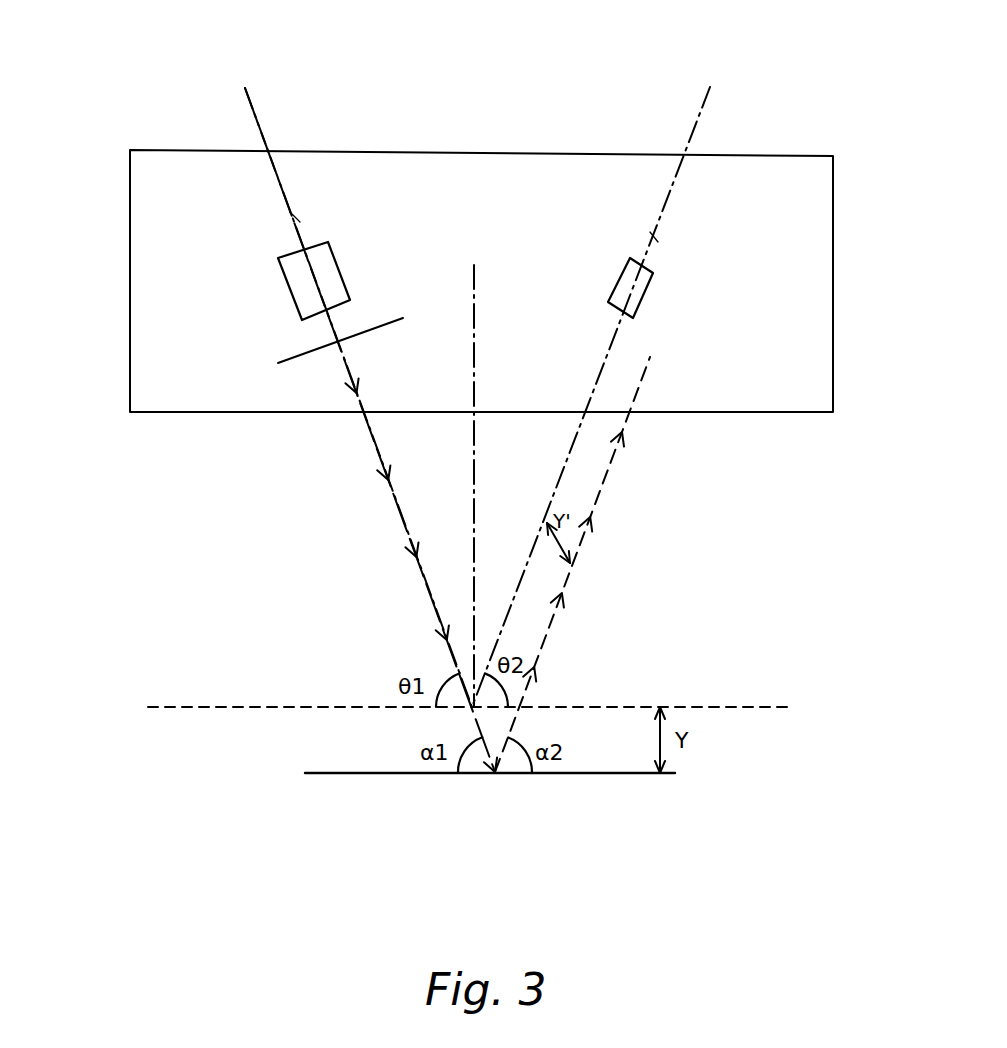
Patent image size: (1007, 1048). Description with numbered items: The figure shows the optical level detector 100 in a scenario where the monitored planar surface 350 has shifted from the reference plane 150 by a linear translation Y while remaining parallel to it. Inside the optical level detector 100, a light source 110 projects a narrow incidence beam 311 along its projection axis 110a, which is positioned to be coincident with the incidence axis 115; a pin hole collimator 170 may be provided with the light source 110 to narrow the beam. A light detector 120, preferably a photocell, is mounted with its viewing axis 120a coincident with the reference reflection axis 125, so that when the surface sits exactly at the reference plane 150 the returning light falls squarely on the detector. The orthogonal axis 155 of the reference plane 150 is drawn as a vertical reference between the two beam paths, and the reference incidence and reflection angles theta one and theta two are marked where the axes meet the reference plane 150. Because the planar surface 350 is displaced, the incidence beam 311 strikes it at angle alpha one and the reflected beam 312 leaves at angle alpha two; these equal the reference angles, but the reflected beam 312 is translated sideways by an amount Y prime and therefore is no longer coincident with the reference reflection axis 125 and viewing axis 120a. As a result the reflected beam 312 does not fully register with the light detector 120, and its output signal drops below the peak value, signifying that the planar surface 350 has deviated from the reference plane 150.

The optical level detector 100 is at (130, 170).
The light source 110 is at (278, 258).
The projection axis 110a is at (250, 107).
The incidence axis 115 is at (295, 216).
The light detector 120 is at (654, 276).
The viewing axis 120a is at (702, 116).
The reference reflection axis 125 is at (654, 238).
The reference plane 150 is at (785, 707).
The orthogonal axis 155 is at (478, 285).
The pin hole collimator 170 is at (290, 358).
The incidence beam 311 is at (383, 462).
The reflected beam 312 is at (603, 490).
The planar surface 350 is at (332, 773).